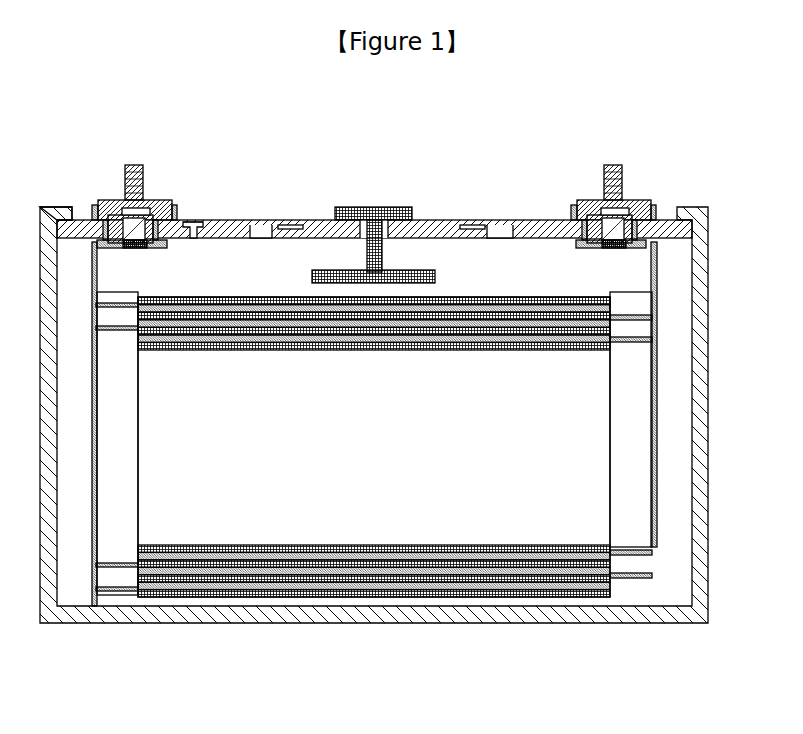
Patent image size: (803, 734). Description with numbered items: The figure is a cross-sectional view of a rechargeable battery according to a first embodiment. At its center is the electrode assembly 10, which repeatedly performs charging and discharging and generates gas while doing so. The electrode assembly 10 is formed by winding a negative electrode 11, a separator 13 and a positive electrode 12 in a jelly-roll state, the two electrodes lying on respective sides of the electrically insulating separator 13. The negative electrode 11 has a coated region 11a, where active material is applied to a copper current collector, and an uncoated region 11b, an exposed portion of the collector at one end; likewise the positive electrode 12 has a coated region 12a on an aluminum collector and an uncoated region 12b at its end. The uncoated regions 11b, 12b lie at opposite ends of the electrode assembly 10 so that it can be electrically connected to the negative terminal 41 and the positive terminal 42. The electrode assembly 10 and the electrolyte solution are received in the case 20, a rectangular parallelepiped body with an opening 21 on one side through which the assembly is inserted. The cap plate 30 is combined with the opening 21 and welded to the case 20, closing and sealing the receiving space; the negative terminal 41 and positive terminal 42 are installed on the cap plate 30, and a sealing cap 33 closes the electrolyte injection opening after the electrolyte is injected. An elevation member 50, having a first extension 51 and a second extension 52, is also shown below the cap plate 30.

The electrode assembly 10 is at (374, 475).
The negative electrode 11 is at (351, 474).
The coated region 11a is at (175, 597).
The uncoated region 11b is at (116, 592).
The positive electrode 12 is at (609, 475).
The coated region 12a is at (645, 668).
The uncoated region 12b is at (632, 580).
The separator 13 is at (292, 588).
The case 20 is at (708, 437).
The opening 21 is at (63, 219).
The cap plate 30 is at (662, 220).
The sealing cap 33 is at (193, 220).
The negative terminal 41 is at (147, 157).
The positive terminal 42 is at (620, 157).
The elevation member 50 is at (398, 212).
The first extension 51 is at (405, 207).
The second extension 52 is at (435, 277).